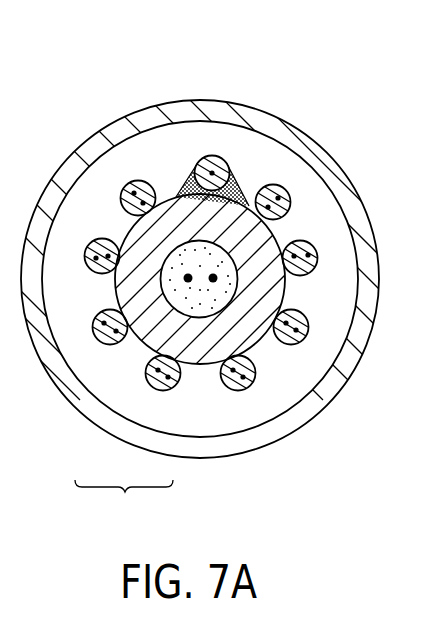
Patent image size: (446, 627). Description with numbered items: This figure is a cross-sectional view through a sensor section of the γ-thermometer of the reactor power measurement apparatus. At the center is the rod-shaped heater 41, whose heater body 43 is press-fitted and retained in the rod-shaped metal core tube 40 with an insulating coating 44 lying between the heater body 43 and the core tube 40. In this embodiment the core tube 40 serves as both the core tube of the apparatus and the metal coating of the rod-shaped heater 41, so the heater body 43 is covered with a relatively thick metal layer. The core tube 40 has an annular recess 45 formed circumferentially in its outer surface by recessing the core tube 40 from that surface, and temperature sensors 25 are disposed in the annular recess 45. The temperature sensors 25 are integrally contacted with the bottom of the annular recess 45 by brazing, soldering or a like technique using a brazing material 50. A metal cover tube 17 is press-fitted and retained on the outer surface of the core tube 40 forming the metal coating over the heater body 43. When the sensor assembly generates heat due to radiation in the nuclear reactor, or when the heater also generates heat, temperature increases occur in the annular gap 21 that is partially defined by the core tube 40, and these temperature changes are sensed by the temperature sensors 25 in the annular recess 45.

The cover tube 17 is at (322, 157).
The annular gap 21 is at (326, 327).
The temperature sensor 25 is at (223, 153).
The core tube 40 is at (143, 247).
The rod-shaped heater 41 is at (124, 502).
The heater body 43 is at (150, 300).
The insulating coating 44 is at (197, 307).
The annular recess 45 is at (284, 291).
The brazing material 50 is at (188, 190).